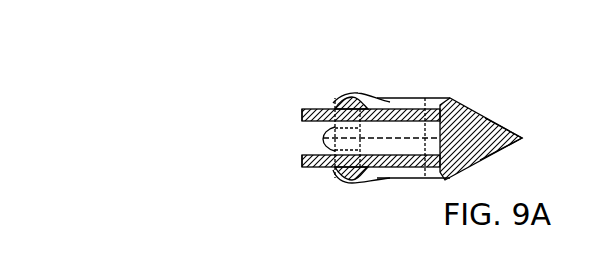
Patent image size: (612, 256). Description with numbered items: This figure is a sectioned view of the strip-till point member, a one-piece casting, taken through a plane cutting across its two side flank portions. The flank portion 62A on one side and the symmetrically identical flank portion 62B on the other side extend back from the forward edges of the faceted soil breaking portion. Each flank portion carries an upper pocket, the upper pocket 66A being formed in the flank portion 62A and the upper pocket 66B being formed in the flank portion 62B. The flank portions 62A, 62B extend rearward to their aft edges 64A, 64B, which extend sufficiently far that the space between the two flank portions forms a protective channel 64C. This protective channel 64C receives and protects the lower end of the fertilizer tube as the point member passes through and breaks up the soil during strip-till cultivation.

The flank portion 62A is at (318, 167).
The flank portion 62B is at (310, 110).
The aft edge 64A is at (306, 164).
The aft edge 64B is at (306, 112).
The protective channel 64C is at (313, 138).
The upper pocket 66A is at (405, 170).
The upper pocket 66B is at (408, 98).